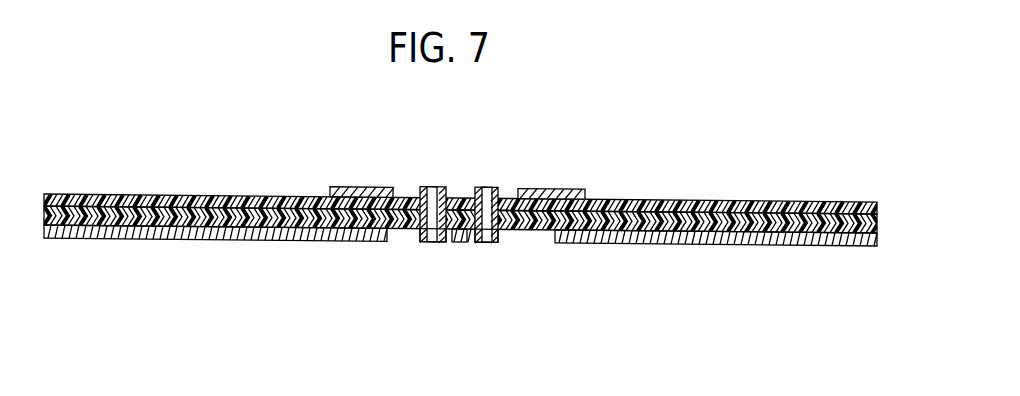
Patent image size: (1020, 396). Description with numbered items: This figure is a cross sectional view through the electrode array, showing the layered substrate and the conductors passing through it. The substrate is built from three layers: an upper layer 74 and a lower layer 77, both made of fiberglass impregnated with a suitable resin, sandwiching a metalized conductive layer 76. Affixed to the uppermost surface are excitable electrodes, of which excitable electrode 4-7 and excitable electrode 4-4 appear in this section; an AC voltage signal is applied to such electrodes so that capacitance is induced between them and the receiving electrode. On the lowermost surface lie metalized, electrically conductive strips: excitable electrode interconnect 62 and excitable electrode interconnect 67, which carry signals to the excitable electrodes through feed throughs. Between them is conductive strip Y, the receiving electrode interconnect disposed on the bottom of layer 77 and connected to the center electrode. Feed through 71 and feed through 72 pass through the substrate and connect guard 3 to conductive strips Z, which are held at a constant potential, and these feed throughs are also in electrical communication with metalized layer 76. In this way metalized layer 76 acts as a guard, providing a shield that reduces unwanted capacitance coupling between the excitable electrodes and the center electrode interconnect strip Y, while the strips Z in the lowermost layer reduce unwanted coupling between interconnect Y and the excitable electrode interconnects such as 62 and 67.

The layer 74 is at (878, 203).
The metalized conductive layer 76 is at (878, 222).
The layer 77 is at (878, 244).
The excitable electrode interconnect 62 is at (238, 240).
The excitable electrode interconnect 67 is at (738, 246).
The excitable electrode 4-7 is at (363, 186).
The excitable electrode 4-4 is at (562, 188).
The guard 3 is at (425, 186).
The feed through 71 is at (483, 187).
The feed through 72 is at (438, 186).
The conductive strip y is at (455, 243).
The conductive strip z is at (422, 243).